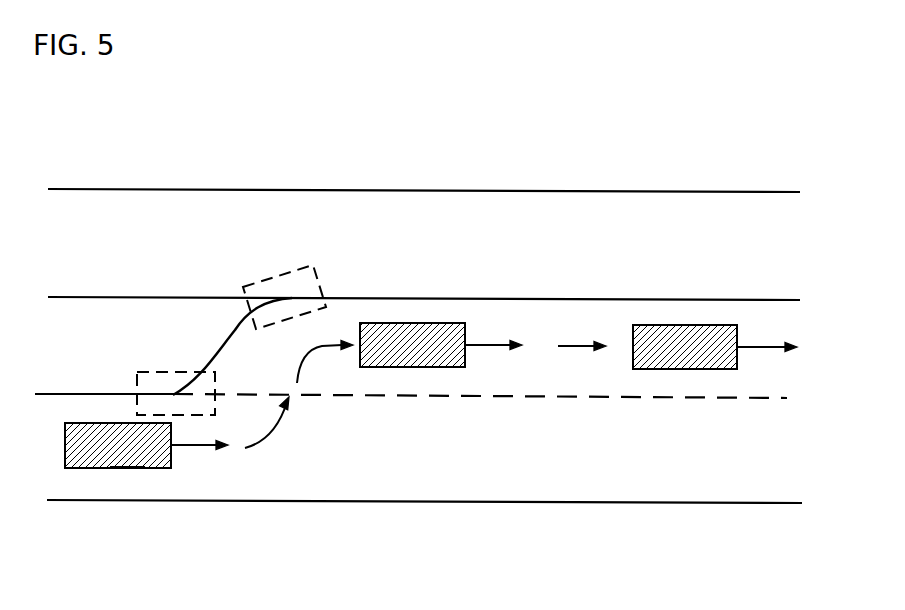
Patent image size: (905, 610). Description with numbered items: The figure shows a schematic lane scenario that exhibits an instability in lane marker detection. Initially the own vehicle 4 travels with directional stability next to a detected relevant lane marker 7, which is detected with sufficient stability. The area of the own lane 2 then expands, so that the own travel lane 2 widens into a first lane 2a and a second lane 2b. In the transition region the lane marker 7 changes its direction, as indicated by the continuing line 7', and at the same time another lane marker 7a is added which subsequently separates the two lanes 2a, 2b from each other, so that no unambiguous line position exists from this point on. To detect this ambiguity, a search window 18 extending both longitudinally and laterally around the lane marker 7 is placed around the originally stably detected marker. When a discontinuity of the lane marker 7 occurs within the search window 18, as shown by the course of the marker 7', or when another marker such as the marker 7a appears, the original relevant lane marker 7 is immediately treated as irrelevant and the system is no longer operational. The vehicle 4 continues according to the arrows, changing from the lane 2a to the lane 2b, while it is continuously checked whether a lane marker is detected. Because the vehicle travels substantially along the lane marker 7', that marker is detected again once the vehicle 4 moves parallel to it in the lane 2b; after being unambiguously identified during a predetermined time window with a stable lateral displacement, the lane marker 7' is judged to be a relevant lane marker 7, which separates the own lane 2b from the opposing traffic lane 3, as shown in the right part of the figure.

The own lane 2 is at (67, 487).
The first lane 2a is at (373, 480).
The second lane 2b is at (548, 380).
The opposing traffic lane 3 is at (148, 222).
The own vehicle 4 is at (127, 468).
The relevant lane marker 7 is at (417, 316).
The continuing line 7' is at (249, 320).
The additional lane marker 7a is at (240, 393).
The search window 18 is at (157, 370).